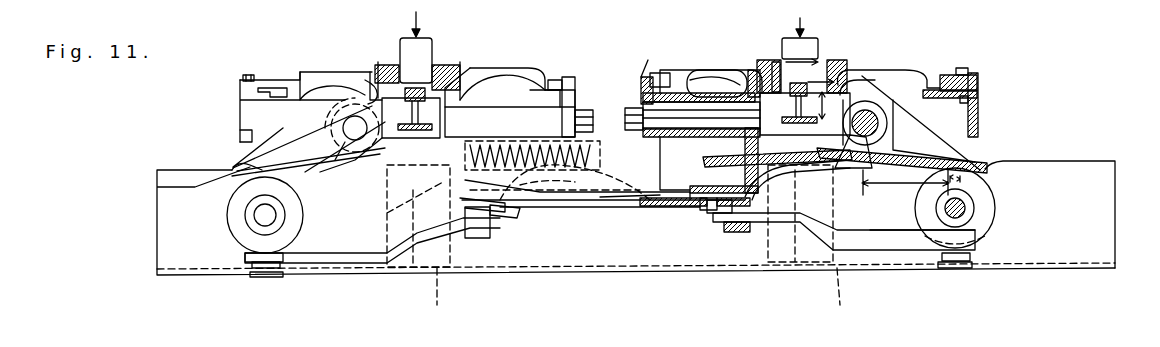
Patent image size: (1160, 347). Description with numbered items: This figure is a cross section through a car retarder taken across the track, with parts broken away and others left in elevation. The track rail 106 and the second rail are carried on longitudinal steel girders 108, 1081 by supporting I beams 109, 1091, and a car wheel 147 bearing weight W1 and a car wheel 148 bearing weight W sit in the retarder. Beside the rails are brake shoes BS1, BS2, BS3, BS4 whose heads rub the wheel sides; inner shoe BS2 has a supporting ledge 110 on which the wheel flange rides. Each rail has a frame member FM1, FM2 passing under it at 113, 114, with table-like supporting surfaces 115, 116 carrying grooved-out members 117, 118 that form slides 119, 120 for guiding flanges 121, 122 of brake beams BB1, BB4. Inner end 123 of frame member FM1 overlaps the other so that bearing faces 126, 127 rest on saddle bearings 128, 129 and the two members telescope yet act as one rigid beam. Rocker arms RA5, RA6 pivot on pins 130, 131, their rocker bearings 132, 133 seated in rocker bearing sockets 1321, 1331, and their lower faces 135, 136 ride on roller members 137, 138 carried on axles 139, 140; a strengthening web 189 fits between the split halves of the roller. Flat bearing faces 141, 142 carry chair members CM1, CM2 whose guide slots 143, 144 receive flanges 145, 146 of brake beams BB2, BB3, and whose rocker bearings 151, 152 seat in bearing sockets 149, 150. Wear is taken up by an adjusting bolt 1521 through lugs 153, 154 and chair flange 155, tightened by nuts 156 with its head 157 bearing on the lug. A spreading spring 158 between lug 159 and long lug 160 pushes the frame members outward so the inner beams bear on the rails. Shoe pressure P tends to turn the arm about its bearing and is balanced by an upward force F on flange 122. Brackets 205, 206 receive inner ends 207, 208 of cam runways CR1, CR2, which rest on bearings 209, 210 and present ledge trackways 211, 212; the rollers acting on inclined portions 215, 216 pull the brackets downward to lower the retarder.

The track rail 106 is at (405, 105).
The longitudinal steel girder 108 is at (443, 296).
The longitudinal steel girder 1081 is at (851, 293).
The supporting I beam 109 is at (418, 129).
The supporting I beam 1091 is at (777, 153).
The supporting ledge 110 is at (408, 102).
The frame member portion under rail 113 is at (382, 143).
The frame member portion under rail 114 is at (818, 168).
The table-like supporting surface 115 is at (244, 107).
The table-like supporting surface 116 is at (978, 118).
The grooved-out member 117 is at (240, 90).
The grooved-out member 118 is at (978, 86).
The slide 119 is at (256, 73).
The slide 120 is at (968, 72).
The guiding flange 121 is at (266, 87).
The guiding flange 122 is at (937, 92).
The inner end of frame member 123 is at (603, 188).
The bearing face 126 is at (510, 190).
The bearing face 127 is at (706, 190).
The saddle bearing 128 is at (500, 206).
The saddle bearing 129 is at (708, 210).
The pivot pin 130 is at (240, 133).
The pivot pin 131 is at (878, 128).
The rocker bearing 132 is at (365, 83).
The rocker bearing socket 1321 is at (365, 72).
The rocker bearing 133 is at (868, 80).
The rocker bearing socket 1331 is at (843, 72).
The lower face of rocker arm 135 is at (157, 188).
The lower face of rocker arm 136 is at (1106, 181).
The roller member 137 is at (240, 230).
The roller member 138 is at (980, 211).
The axle 139 is at (255, 216).
The axle 140 is at (950, 220).
The flat bearing face 141 is at (502, 140).
The flat bearing face 142 is at (609, 125).
The guide slot 143 is at (560, 84).
The guide slot 144 is at (661, 85).
The flange 145 is at (546, 92).
The flange 146 is at (717, 83).
The car wheel 147 is at (416, 60).
The car wheel 148 is at (800, 47).
The bearing socket 149 is at (509, 122).
The bearing socket 150 is at (756, 72).
The rocker bearing 151 is at (456, 106).
The rocker bearing 152 is at (732, 88).
The adjusting bolt 1521 is at (657, 120).
The lug 153 is at (676, 136).
The lug 154 is at (750, 152).
The flange 155 is at (641, 92).
The nuts 156 is at (640, 108).
The bolt head 157 is at (775, 60).
The spreading spring 158 is at (547, 173).
The lug 159 is at (630, 183).
The long lug 160 is at (403, 216).
The strengthening web 189 is at (306, 171).
The bracket 205 is at (472, 240).
The bracket 206 is at (748, 233).
The inner end of cam runway 207 is at (500, 232).
The inner end of cam runway 208 is at (720, 223).
The bearing 209 is at (251, 278).
The bearing 210 is at (968, 272).
The ledge trackway 211 is at (893, 244).
The ledge trackway 212 is at (322, 260).
The inclined portion 215 is at (414, 266).
The inclined portion 216 is at (805, 235).
The brake beam BB1 is at (312, 72).
The brake beam BB2 is at (515, 70).
The brake beam BB3 is at (695, 70).
The brake beam BB4 is at (912, 62).
The brake shoe BS1 is at (392, 60).
The brake shoe BS2 is at (444, 70).
The brake shoe BS3 is at (770, 62).
The brake shoe BS4 is at (830, 60).
The chair member CM1 is at (570, 78).
The chair member CM2 is at (645, 75).
The cam runway CR1 is at (374, 246).
The cam runway CR2 is at (882, 241).
The frame member FM1 is at (568, 206).
The frame member FM2 is at (653, 208).
The rocker arm RA5 is at (252, 166).
The rocker arm RA6 is at (966, 150).
The weight W is at (802, 18).
The weight W1 is at (428, 22).
The shoe pressure P is at (810, 73).
The dimension a is at (825, 105).
The dimension b is at (905, 182).
The dimension w is at (959, 181).
The resulting force F is at (954, 112).